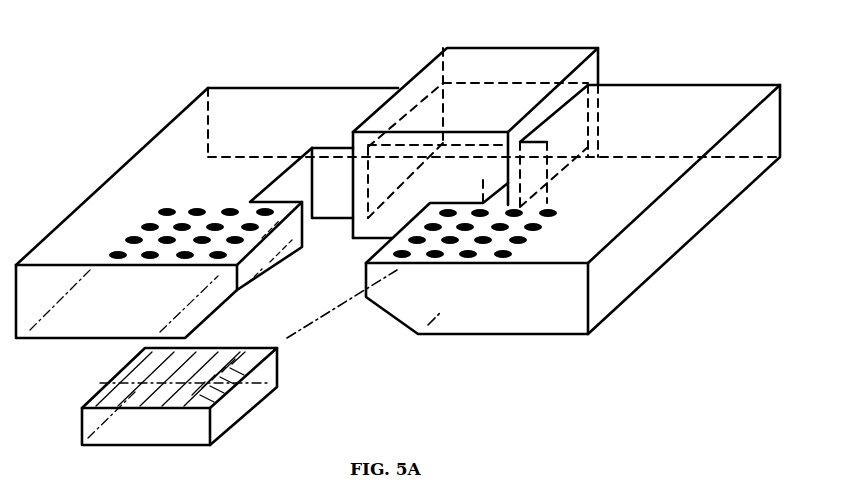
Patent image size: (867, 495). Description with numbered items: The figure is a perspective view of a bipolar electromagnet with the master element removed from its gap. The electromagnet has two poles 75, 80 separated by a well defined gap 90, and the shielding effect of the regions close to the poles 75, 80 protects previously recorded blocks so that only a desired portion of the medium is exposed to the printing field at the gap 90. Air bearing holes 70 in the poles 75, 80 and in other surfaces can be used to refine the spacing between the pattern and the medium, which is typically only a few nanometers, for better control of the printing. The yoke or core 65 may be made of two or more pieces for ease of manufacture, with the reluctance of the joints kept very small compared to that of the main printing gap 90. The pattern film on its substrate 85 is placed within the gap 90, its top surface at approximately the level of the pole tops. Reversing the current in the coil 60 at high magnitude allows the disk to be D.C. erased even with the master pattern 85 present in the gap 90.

The coil 60 is at (498, 63).
The yoke or core 65 is at (247, 100).
The air bearing holes 70 is at (128, 233).
The pole 75 is at (67, 340).
The pole 80 is at (530, 310).
The pattern film substrate 85 is at (250, 392).
The gap 90 is at (302, 283).